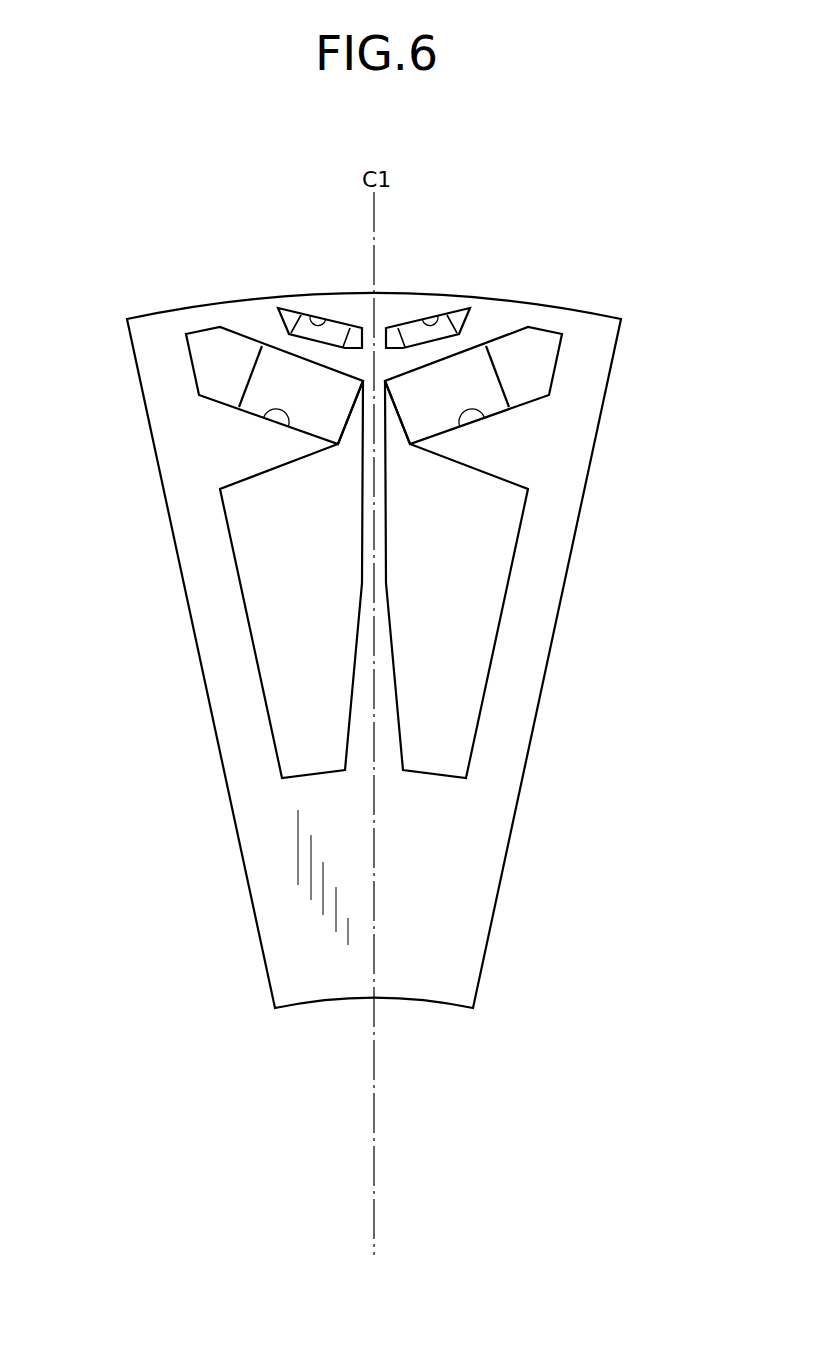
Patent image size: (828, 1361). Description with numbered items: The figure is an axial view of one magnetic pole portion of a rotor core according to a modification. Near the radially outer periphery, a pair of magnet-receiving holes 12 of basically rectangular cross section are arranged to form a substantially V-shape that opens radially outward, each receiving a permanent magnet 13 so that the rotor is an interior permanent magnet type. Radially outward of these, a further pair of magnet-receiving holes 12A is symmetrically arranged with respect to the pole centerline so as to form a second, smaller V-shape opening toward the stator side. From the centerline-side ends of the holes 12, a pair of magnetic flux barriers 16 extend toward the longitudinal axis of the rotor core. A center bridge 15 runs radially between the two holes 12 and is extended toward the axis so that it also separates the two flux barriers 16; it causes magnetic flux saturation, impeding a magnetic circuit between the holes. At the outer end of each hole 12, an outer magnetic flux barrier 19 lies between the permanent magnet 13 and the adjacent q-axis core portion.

The magnet-receiving hole 12 is at (267, 407).
The magnet-receiving hole 12A is at (317, 320).
The permanent magnet 13 is at (280, 373).
The center bridge 15 is at (383, 670).
The magnetic flux barrier 16 is at (322, 738).
The outer magnetic flux barrier 19 is at (223, 373).